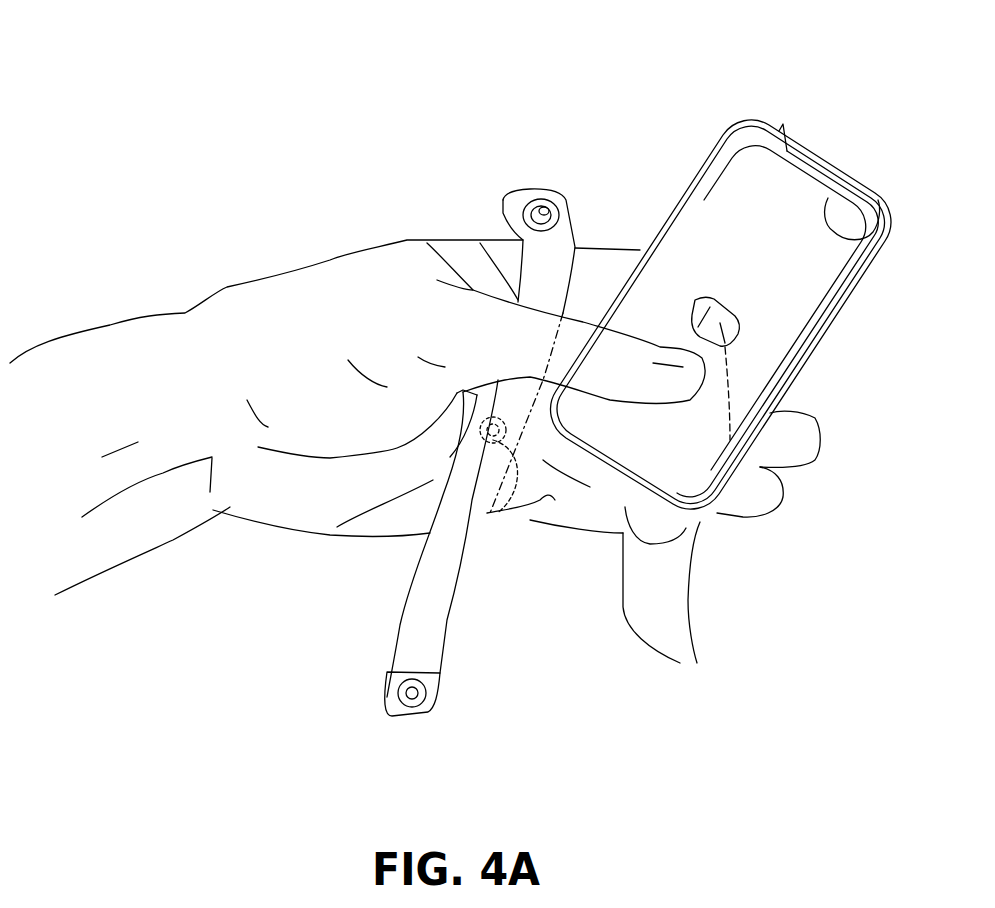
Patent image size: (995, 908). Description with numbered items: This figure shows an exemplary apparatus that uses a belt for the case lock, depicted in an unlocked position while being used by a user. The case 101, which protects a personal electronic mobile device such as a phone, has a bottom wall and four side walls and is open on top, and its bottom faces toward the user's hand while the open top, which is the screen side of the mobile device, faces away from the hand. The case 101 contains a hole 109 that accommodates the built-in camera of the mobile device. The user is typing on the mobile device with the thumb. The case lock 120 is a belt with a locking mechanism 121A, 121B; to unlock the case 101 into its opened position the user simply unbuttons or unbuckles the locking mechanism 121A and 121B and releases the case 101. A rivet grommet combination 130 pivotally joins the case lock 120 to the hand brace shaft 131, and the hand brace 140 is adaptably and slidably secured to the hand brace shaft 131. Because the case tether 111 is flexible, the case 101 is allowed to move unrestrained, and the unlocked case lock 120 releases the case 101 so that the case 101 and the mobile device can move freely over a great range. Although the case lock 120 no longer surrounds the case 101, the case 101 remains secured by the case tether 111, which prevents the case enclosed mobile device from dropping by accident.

The case 101 is at (737, 170).
The hole 109 is at (852, 217).
The case tether 111 is at (673, 616).
The case lock 120 is at (480, 243).
The locking mechanism 121A is at (538, 212).
The locking mechanism 121B is at (432, 690).
The rivet grommet combination 130 is at (490, 513).
The hand brace shaft 131 is at (488, 438).
The hand brace 140 is at (430, 240).